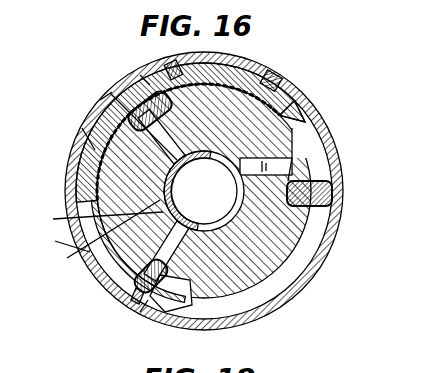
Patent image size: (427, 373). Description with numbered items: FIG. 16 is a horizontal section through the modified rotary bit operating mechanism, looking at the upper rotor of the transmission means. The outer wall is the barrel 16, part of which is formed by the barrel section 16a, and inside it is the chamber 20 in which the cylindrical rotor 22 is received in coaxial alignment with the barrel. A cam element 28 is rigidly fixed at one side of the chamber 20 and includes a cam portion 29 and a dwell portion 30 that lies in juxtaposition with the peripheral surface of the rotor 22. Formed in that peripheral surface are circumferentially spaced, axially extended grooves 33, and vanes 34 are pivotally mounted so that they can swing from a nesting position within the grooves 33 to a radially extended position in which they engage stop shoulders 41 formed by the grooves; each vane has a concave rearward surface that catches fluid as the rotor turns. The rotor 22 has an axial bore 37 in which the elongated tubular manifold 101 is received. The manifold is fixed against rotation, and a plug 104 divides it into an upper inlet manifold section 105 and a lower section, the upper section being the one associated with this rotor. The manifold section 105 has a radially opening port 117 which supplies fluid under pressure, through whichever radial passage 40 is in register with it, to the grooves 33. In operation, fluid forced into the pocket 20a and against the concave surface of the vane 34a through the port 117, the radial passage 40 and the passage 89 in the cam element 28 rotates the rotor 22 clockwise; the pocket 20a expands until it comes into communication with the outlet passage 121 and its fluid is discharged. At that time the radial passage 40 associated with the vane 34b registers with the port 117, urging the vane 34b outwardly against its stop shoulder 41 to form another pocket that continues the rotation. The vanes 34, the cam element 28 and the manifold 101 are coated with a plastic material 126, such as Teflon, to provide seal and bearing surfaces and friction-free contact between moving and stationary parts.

The barrel 16 is at (66, 173).
The barrel section 16a is at (108, 98).
The chamber 20 is at (273, 296).
The pocket 20a is at (306, 130).
The rotor 22 is at (284, 272).
The cam element 28 is at (146, 82).
The cam portion 29 is at (82, 163).
The dwell portion 30 is at (238, 78).
The grooves 33 is at (306, 149).
The vanes 34 is at (143, 102).
The vane 34a is at (160, 127).
The vane 34b is at (100, 140).
The axial bore 37 is at (172, 191).
The radial passages 40 is at (290, 168).
The stop shoulders 41 is at (168, 72).
The passage 89 is at (282, 104).
The manifold 101 is at (58, 243).
The plug 104 is at (95, 222).
The upper inlet manifold section 105 is at (96, 237).
The port 117 is at (238, 214).
The outlet passage 121 is at (140, 292).
The plastic coating material 126 is at (120, 118).